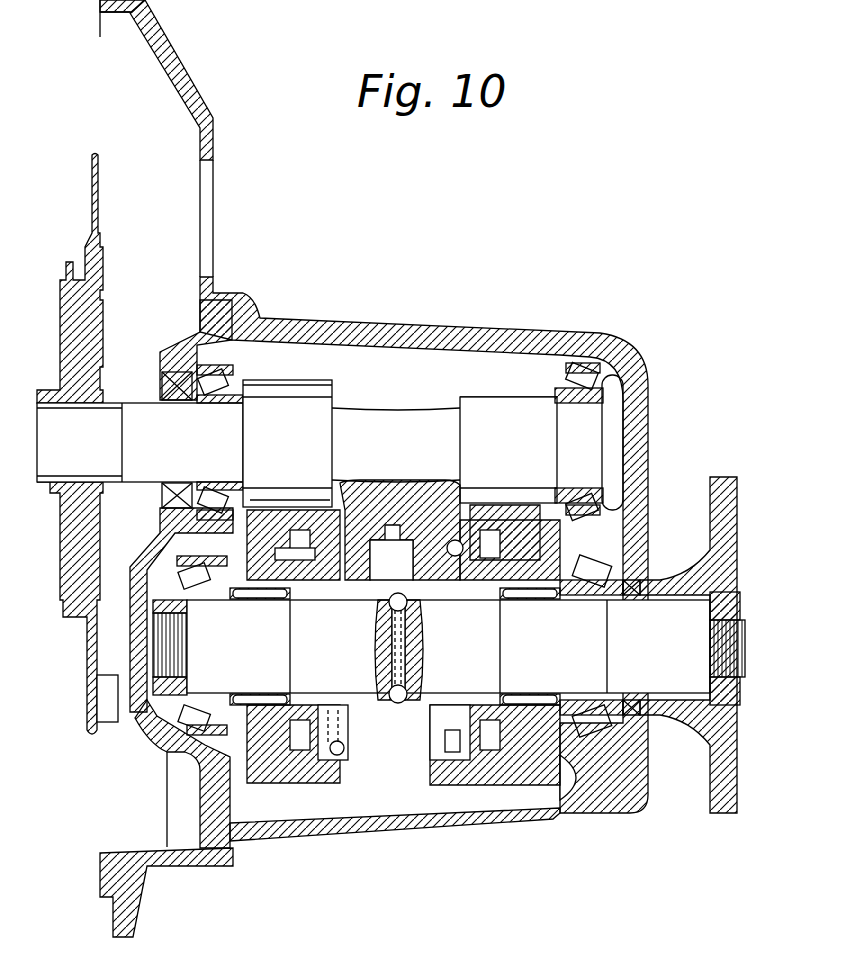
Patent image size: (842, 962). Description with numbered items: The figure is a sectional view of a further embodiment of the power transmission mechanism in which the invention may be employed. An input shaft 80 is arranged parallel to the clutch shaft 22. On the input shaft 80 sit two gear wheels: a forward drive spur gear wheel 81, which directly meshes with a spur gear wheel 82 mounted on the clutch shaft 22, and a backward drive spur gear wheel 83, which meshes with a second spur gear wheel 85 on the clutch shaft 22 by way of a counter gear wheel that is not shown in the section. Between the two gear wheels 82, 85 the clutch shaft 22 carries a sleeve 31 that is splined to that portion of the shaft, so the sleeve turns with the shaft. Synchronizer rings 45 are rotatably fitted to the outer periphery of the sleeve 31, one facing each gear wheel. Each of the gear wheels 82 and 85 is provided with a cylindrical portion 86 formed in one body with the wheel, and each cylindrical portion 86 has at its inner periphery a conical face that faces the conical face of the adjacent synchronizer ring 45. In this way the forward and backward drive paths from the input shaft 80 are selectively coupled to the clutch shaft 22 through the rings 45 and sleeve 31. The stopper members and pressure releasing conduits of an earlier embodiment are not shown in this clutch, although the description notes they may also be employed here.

The clutch shaft 22 is at (572, 665).
The sleeve 31 is at (393, 735).
The synchronizer rings 45 is at (424, 762).
The input shaft 80 is at (192, 455).
The forward drive spur gear wheel 81 is at (318, 383).
The spur gear wheel 82 is at (292, 510).
The backward drive spur gear wheel 83 is at (485, 397).
The spur gear wheel 85 is at (522, 525).
The cylindrical portion 86 is at (455, 505).